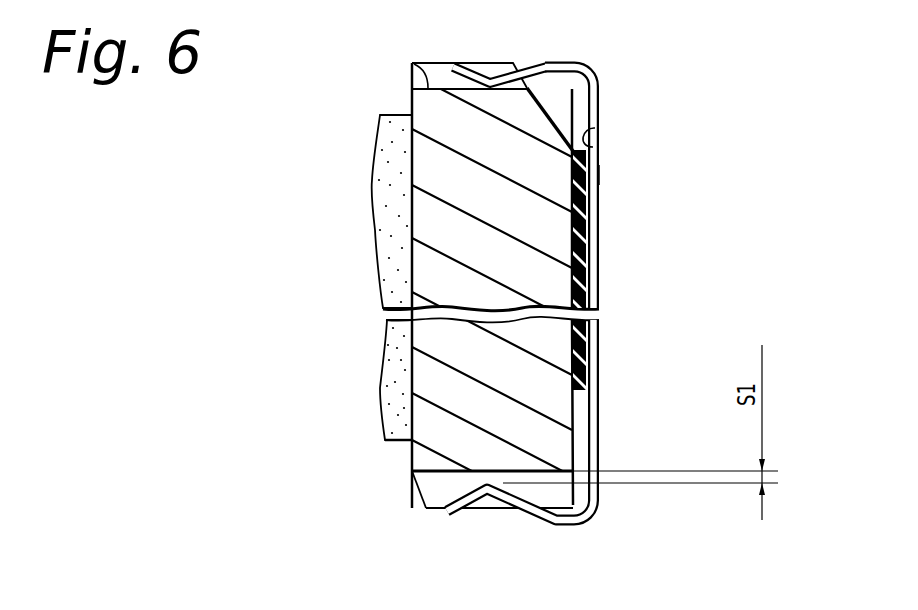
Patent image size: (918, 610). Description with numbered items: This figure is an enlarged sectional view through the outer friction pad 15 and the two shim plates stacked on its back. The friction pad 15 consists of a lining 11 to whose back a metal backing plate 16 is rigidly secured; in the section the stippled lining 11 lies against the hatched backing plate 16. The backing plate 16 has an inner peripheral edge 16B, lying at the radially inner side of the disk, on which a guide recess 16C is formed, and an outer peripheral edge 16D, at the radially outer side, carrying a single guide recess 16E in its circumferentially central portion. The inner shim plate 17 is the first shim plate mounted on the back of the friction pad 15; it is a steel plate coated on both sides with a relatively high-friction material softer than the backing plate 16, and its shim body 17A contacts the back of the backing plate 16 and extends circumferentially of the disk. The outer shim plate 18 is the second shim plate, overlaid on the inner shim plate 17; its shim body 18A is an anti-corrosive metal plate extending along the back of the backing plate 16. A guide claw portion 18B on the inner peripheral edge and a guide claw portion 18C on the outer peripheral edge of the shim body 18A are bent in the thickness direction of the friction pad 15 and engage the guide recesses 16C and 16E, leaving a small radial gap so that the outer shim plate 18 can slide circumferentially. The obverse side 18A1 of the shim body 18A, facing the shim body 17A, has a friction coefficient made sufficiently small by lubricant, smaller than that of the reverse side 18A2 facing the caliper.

The lining 11 is at (397, 250).
The outer friction pad 15 is at (376, 387).
The backing plate 16 is at (427, 210).
The inner peripheral edge 16B is at (432, 510).
The guide recesses 16C is at (413, 485).
The outer peripheral edge 16D is at (488, 63).
The guide recess 16E is at (412, 63).
The inner shim plate 17 is at (580, 240).
The shim body 17A is at (589, 366).
The outer shim plate 18 is at (600, 292).
The shim body 18A is at (600, 349).
The obverse side 18A1 is at (595, 128).
The reverse side 18A2 is at (599, 175).
The guide claw portions 18B is at (534, 519).
The guide claw portion 18C is at (533, 62).